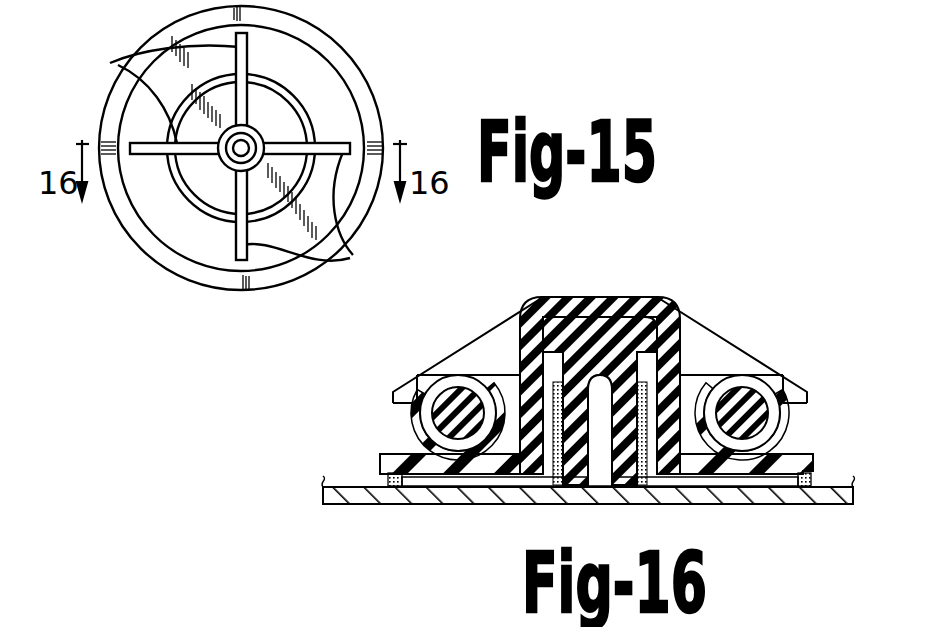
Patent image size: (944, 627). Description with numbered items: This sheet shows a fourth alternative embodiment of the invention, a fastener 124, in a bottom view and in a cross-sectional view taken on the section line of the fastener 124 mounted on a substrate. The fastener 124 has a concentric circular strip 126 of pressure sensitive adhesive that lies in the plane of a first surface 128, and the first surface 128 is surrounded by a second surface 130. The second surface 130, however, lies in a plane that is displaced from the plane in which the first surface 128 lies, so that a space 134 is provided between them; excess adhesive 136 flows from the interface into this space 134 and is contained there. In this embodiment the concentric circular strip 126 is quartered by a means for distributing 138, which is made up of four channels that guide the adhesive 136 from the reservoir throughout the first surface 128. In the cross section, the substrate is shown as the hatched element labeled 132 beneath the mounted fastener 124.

In FIG. 15, the fastener 124 is at (110, 253).
In FIG. 15, the concentric circular strip 126 is at (287, 88).
In FIG. 16, the concentric circular strip 126 is at (472, 478).
In FIG. 15, the first surface 128 is at (203, 245).
In FIG. 16, the first surface 128 is at (407, 486).
In FIG. 15, the second surface 130 is at (265, 280).
In FIG. 16, the second surface 130 is at (380, 470).
In FIG. 16, the mounting surface 132 is at (330, 490).
In FIG. 16, the space 134 is at (817, 473).
In FIG. 16, the adhesive 136 is at (388, 480).
In FIG. 15, the means for distributing 138 is at (112, 63).
In FIG. 16, the means for distributing 138 is at (453, 476).